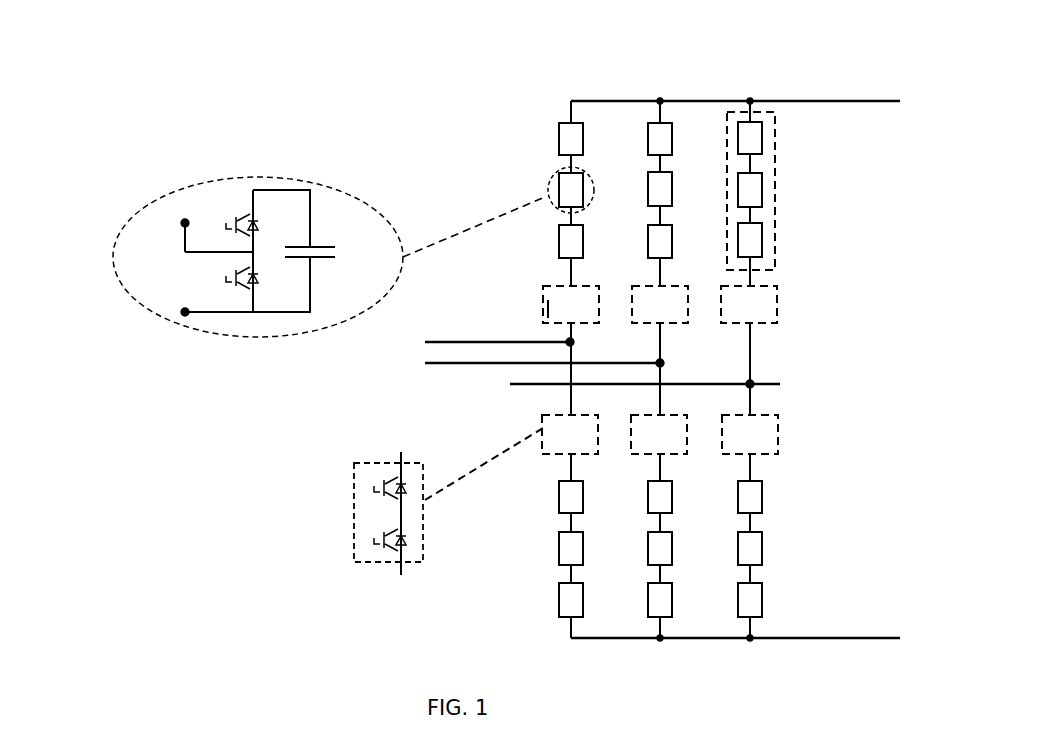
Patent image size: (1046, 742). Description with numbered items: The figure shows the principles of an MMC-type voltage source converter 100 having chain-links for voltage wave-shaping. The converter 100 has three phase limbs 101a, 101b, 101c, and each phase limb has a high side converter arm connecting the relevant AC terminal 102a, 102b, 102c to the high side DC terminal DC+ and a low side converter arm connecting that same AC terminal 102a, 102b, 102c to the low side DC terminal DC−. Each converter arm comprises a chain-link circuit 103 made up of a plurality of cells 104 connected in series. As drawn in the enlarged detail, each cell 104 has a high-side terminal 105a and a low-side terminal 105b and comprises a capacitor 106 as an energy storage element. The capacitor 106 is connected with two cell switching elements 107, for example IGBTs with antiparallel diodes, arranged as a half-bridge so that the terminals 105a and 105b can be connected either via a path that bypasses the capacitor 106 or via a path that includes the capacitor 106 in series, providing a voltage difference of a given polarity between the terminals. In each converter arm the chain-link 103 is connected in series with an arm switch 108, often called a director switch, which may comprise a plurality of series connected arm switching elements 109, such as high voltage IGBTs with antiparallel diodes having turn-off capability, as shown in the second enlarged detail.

The voltage source converter 100 is at (304, 70).
The first phase limb 101a is at (585, 84).
The second phase limb 101b is at (685, 84).
The third phase limb 101c is at (770, 84).
The first AC terminal 102a is at (560, 342).
The second AC terminal 102b is at (702, 358).
The third AC terminal 102c is at (780, 384).
The chain-link circuit 103 is at (778, 186).
The cell 104 is at (558, 143).
The high-side cell terminal 105a is at (183, 223).
The low-side cell terminal 105b is at (184, 313).
The capacitor 106 is at (320, 243).
The cell switching element 107 is at (250, 213).
The arm switch 108 is at (778, 437).
The arm switching element 109 is at (393, 547).